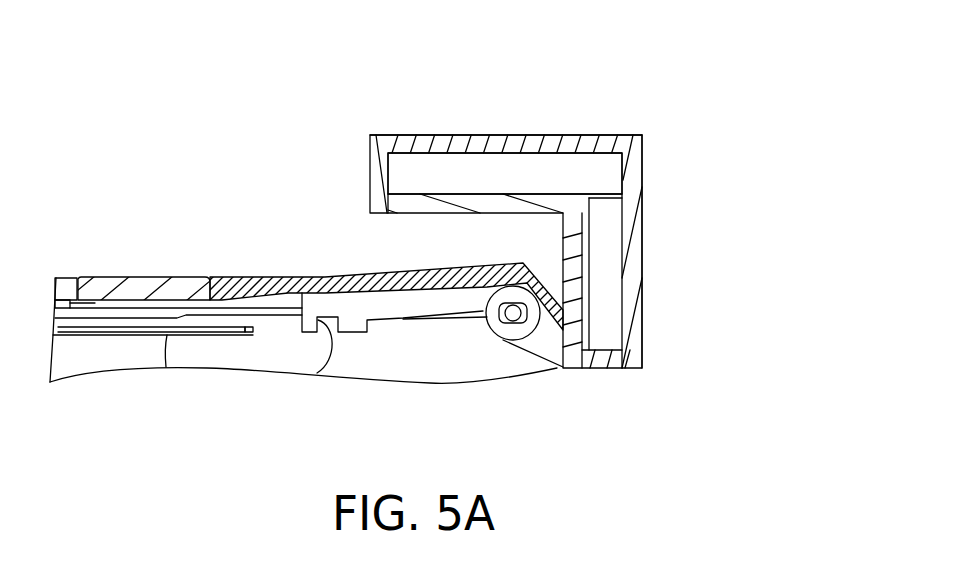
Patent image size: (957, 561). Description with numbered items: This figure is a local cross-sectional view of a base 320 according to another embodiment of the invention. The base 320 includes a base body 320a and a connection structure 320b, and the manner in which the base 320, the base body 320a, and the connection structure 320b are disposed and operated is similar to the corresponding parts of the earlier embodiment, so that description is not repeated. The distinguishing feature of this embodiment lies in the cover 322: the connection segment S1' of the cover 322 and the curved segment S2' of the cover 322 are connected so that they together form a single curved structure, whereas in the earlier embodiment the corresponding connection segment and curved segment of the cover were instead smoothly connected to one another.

The base 320 is at (792, 310).
The base body 320a is at (433, 360).
The connection structure 320b is at (675, 315).
The cover 322 is at (442, 170).
The connection segment S1' is at (506, 73).
The curved segment S2' is at (682, 221).